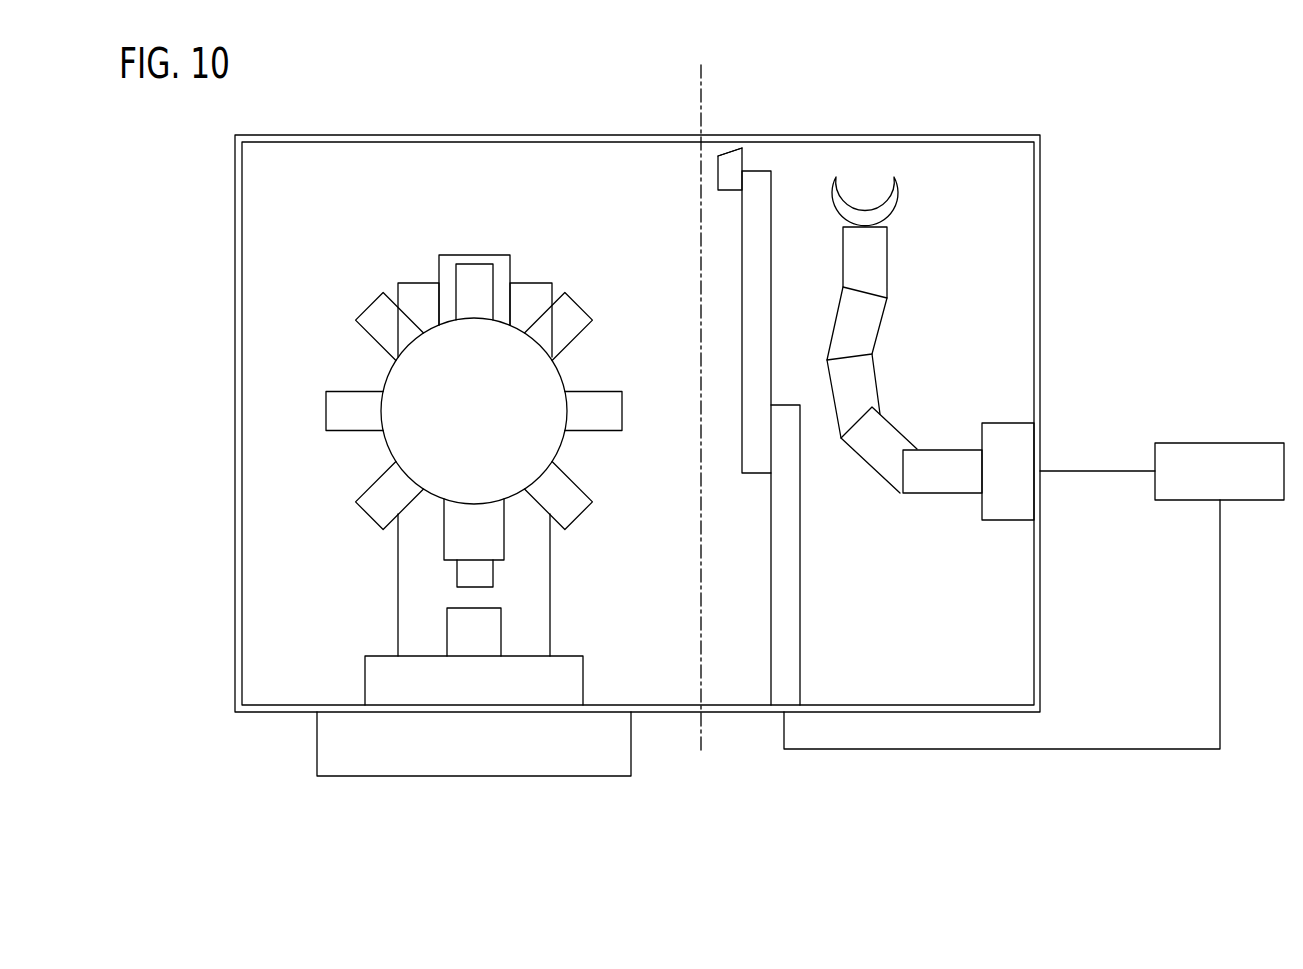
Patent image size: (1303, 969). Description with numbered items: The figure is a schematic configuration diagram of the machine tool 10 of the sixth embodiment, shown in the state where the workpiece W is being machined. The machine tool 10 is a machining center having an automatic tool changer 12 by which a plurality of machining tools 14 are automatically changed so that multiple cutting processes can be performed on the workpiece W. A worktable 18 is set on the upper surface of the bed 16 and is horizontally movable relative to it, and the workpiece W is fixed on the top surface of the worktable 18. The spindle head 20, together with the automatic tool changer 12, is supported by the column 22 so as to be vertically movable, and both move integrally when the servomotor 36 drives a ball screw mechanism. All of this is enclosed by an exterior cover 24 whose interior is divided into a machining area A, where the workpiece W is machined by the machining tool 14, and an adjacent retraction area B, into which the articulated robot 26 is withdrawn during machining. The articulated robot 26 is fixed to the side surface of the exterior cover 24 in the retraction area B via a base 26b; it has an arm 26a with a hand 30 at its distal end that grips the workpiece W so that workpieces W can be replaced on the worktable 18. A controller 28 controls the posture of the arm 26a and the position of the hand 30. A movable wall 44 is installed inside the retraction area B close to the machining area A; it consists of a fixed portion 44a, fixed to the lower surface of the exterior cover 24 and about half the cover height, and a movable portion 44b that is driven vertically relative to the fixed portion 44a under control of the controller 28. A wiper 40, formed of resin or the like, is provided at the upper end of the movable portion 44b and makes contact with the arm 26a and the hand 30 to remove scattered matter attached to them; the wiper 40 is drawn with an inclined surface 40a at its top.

The machine tool 10 is at (1026, 98).
The automatic tool changer 12 is at (403, 378).
The machining tool 14 is at (466, 575).
The bed 16 is at (338, 748).
The worktable 18 is at (383, 683).
The spindle head 20 is at (473, 530).
The column 22 is at (421, 298).
The exterior cover 24 is at (240, 292).
The articulated robot 26 is at (970, 362).
The arm 26a is at (936, 478).
The base 26b is at (1018, 440).
The controller 28 is at (1212, 443).
The hand 30 is at (878, 205).
The servomotor 36 is at (474, 262).
The wiper 40 is at (733, 160).
The inclined surface of stopper 40a is at (745, 155).
The movable wall 44 is at (835, 438).
The fixed portion 44a is at (782, 612).
The movable portion 44b is at (752, 263).
The machining area A is at (258, 345).
The retraction area B is at (1020, 285).
The workpiece W is at (458, 627).